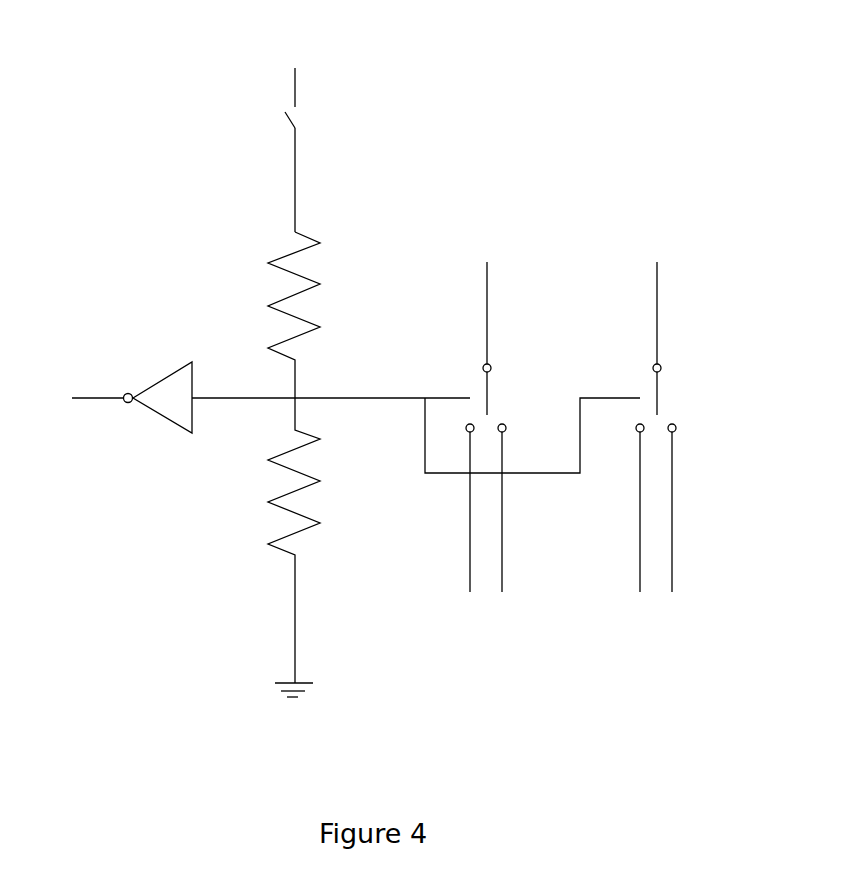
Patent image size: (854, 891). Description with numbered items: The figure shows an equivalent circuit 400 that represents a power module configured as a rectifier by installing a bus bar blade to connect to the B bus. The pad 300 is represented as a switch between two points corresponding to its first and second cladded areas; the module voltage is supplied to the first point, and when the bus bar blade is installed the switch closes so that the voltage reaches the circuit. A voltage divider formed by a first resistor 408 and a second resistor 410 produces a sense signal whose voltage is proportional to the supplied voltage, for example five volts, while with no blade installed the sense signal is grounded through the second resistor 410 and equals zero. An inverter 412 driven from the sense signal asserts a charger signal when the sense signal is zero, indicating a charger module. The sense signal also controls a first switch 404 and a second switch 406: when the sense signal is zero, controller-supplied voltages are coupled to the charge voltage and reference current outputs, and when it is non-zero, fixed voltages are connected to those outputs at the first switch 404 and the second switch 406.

The pad 300 is at (302, 107).
The equivalent circuit 400 is at (547, 125).
The switch SW1 404 is at (490, 385).
The switch SW2 406 is at (665, 388).
The resistor R1 408 is at (318, 293).
The resistor R2 410 is at (282, 518).
The inverter 412 is at (163, 368).